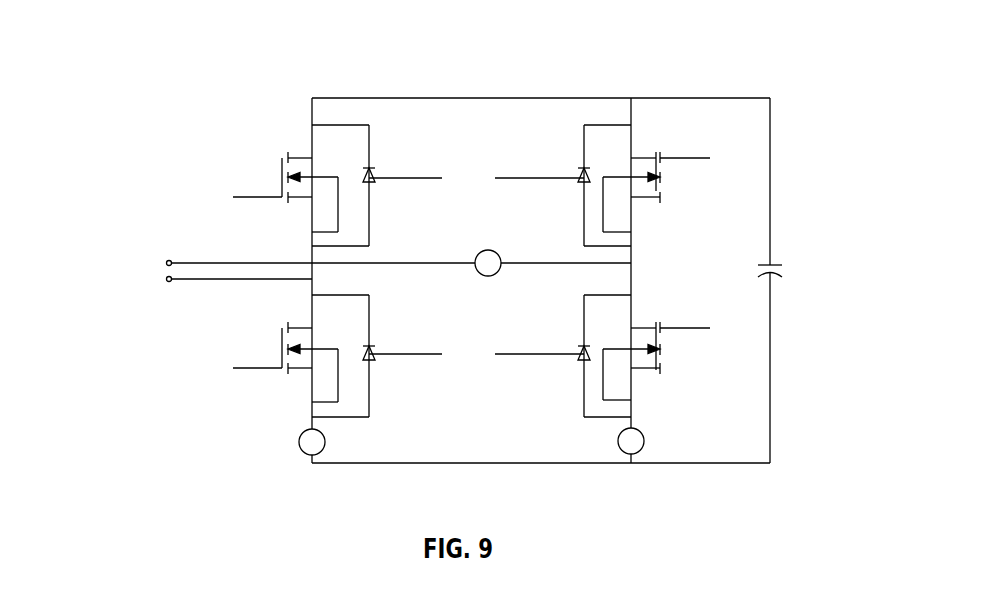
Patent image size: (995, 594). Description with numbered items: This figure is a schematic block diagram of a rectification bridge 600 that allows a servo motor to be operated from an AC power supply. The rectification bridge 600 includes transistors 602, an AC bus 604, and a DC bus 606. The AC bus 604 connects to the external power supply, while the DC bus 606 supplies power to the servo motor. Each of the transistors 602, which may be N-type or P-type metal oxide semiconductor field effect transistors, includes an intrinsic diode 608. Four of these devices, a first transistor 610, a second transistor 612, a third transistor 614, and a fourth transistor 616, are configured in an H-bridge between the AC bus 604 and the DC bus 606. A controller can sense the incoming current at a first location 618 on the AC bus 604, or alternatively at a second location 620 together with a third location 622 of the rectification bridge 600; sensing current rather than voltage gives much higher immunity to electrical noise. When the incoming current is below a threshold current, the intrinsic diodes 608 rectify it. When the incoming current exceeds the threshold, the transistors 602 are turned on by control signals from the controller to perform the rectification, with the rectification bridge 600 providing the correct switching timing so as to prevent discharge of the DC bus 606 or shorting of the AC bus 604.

The rectification bridge 600 is at (193, 55).
The transistors 602 is at (227, 162).
The AC bus 604 is at (147, 295).
The DC bus 606 is at (798, 237).
The intrinsic diode 608 is at (476, 272).
The first transistor 610 is at (302, 157).
The second transistor 612 is at (632, 205).
The third transistor 614 is at (300, 370).
The fourth transistor 616 is at (630, 375).
The first location 618 is at (488, 265).
The second location 620 is at (313, 443).
The third location 622 is at (633, 441).